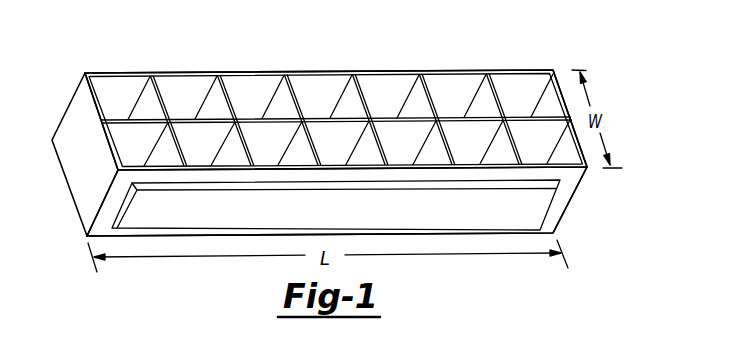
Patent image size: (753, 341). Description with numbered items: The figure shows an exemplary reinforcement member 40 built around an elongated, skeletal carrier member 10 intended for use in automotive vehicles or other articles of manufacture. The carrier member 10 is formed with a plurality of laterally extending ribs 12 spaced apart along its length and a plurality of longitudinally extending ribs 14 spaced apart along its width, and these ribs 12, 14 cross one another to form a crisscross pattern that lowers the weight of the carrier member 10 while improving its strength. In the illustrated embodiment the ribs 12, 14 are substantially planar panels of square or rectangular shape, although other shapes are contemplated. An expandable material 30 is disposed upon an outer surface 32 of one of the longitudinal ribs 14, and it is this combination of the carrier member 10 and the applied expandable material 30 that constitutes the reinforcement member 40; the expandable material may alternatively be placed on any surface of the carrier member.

The carrier member 10 is at (305, 72).
The laterally extending ribs 12 is at (550, 90).
The longitudinally extending ribs 14 is at (207, 132).
The expandable material 30 is at (147, 210).
The outer surface 32 is at (572, 177).
The reinforcement member 40 is at (378, 52).